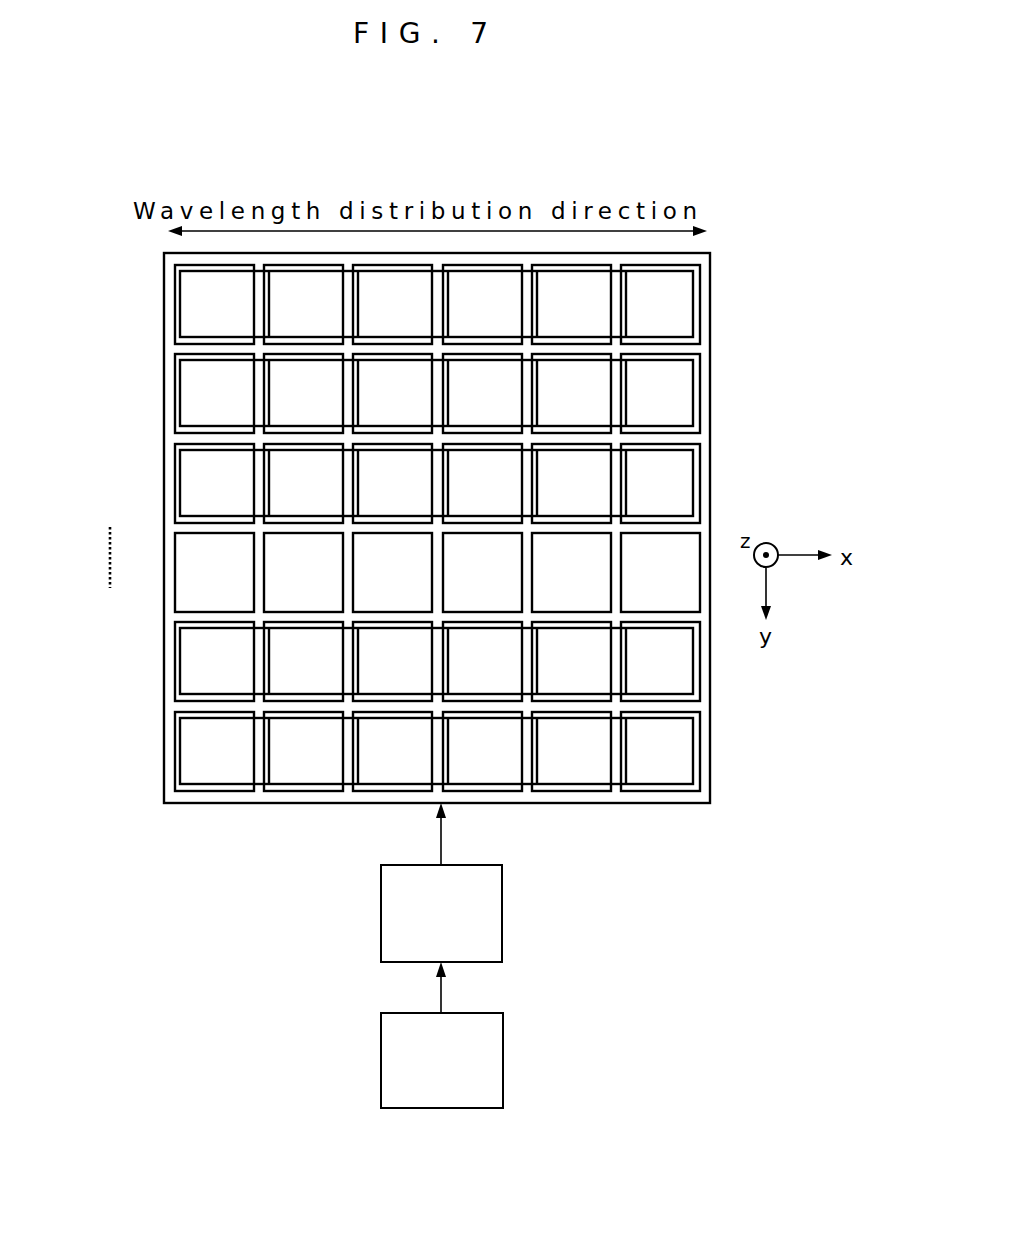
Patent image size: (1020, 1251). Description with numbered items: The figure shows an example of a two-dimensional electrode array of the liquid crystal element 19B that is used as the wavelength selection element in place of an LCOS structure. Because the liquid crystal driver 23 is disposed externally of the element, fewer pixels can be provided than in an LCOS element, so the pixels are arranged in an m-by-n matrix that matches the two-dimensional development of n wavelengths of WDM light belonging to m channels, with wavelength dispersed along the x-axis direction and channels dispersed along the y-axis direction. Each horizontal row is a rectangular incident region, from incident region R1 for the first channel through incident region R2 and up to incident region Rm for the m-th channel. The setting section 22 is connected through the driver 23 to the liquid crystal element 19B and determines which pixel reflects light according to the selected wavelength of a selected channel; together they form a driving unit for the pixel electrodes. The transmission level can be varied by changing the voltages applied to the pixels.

The liquid crystal element 19B is at (710, 290).
The incident region Rm is at (181, 319).
The incident region R2 is at (183, 677).
The incident region R1 is at (183, 767).
The driver 23 is at (381, 913).
The setting section 22 is at (381, 1063).